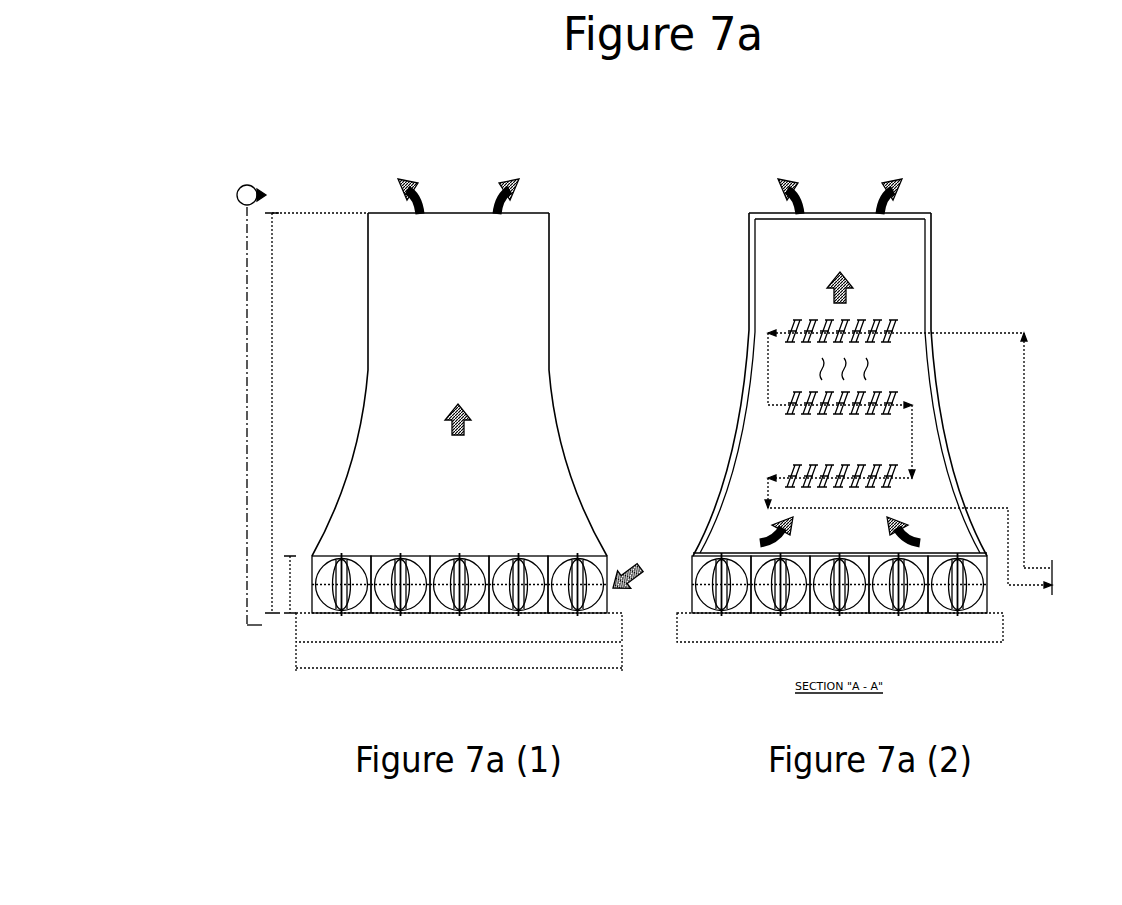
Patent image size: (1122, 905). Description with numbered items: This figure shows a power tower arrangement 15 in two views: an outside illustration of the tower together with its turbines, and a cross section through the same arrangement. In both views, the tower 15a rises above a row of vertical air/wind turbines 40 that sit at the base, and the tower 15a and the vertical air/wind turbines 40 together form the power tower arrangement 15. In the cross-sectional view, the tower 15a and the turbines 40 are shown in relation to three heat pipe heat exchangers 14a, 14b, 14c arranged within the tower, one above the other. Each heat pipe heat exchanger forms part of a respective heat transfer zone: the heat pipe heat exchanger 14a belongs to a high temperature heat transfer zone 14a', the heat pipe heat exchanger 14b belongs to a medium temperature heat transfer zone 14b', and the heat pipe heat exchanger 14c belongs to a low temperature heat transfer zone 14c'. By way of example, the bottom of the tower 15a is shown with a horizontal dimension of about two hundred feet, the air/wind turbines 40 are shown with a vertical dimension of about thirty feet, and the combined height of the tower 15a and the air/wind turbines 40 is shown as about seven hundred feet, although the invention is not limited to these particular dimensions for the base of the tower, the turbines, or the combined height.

The power tower arrangement 15 is at (1028, 131).
The tower 15a is at (552, 308).
The vertical air/wind turbines 40 is at (593, 558).
The heat pipe heat exchanger 14a is at (843, 301).
The heat pipe heat exchanger 14b is at (848, 382).
The heat pipe heat exchanger 14c is at (830, 455).
The high temperature heat transfer zone 14a' is at (861, 368).
The medium temperature heat transfer zone 14b' is at (803, 438).
The low temperature heat transfer zone 14c' is at (867, 524).